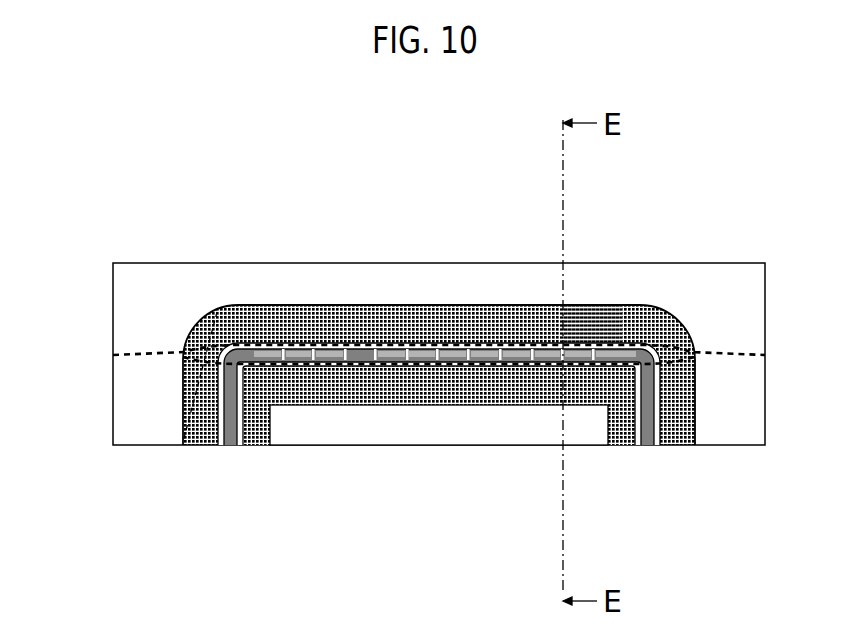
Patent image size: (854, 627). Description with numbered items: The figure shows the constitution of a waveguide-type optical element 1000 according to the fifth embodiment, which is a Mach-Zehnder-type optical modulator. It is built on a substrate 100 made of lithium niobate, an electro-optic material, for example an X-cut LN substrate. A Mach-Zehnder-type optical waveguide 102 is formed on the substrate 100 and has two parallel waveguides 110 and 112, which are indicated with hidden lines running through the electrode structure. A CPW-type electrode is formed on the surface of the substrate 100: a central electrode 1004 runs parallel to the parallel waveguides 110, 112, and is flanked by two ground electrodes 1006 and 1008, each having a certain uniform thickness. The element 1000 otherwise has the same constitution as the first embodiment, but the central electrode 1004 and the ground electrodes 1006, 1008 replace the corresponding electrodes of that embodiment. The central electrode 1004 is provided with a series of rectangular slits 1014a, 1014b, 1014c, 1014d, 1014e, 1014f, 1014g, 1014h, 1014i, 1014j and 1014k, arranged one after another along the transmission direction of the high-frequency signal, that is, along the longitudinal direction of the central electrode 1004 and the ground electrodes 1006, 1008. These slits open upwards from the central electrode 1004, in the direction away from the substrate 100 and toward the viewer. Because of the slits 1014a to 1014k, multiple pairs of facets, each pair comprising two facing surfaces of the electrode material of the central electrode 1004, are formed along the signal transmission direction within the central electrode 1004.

The waveguide-type optical element 1000 is at (131, 167).
The substrate 100 is at (137, 278).
The Mach-Zehnder-type optical waveguide 102 is at (130, 355).
The parallel waveguide 110 is at (215, 314).
The parallel waveguide 112 is at (183, 445).
The central electrode 1004 is at (260, 346).
The ground electrode 1006 is at (620, 323).
The ground electrode 1008 is at (643, 423).
The rectangular slit 1014a is at (283, 363).
The rectangular slit 1014b is at (313, 363).
The rectangular slit 1014c is at (345, 363).
The rectangular slit 1014d is at (375, 363).
The rectangular slit 1014e is at (407, 363).
The rectangular slit 1014f is at (437, 363).
The rectangular slit 1014g is at (468, 363).
The rectangular slit 1014h is at (500, 363).
The rectangular slit 1014i is at (532, 363).
The rectangular slit 1014j is at (562, 363).
The rectangular slit 1014k is at (593, 363).